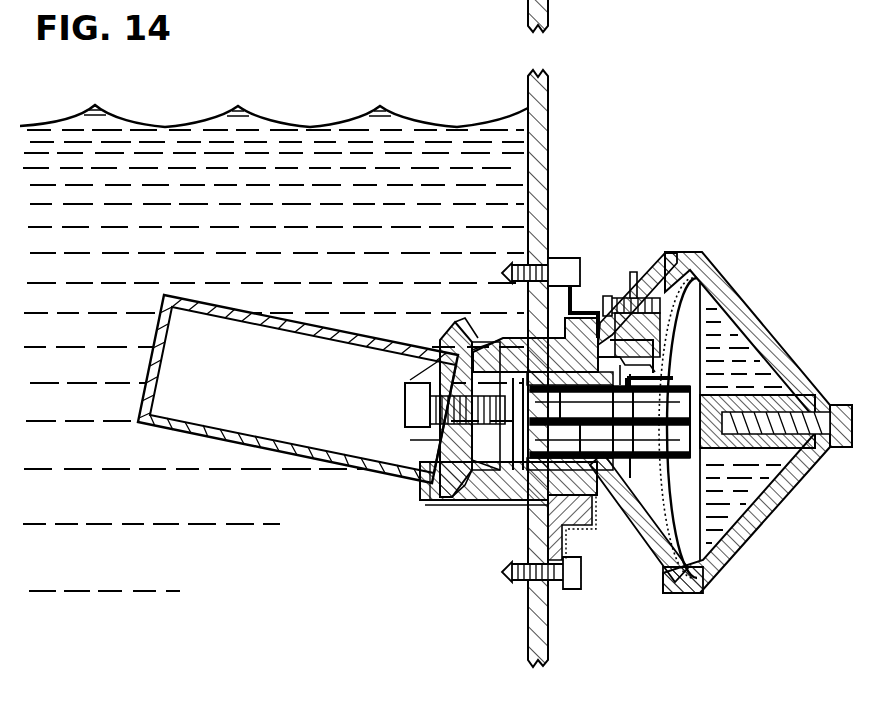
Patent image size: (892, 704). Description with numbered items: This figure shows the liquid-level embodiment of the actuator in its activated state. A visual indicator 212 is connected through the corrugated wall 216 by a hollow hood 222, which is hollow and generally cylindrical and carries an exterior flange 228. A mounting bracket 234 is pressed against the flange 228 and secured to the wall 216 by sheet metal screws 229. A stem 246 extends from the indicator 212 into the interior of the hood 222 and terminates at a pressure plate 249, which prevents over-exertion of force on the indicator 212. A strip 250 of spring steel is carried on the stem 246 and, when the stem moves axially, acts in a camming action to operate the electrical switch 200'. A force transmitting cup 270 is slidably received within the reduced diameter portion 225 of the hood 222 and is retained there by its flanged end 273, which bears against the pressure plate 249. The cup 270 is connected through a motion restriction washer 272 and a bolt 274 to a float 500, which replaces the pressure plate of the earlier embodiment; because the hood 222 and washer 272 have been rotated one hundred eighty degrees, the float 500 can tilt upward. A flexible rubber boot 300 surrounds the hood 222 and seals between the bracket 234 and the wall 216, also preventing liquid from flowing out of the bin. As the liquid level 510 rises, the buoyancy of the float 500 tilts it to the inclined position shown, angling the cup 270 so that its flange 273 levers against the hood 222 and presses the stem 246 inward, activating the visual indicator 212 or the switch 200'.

The liquid level 510 is at (178, 127).
The float 500 is at (264, 302).
The corrugated wall 216 is at (550, 185).
The hollow hood 222 is at (478, 502).
The reduced diameter portion 225 is at (447, 500).
The pressure plate 249 is at (512, 507).
The force transmitting cup 270 is at (430, 377).
The flanged end 273 is at (480, 340).
The flexible rubber boot 300 is at (468, 340).
The motion restriction washer 272 is at (444, 470).
The bolt 274 is at (413, 400).
The stem 246 is at (667, 457).
The sheet metal screws 229 is at (510, 262).
The exterior flange 228 is at (590, 310).
The mounting bracket 234 is at (592, 530).
The electrical switch 200' is at (661, 286).
The visual indicator 212 is at (745, 296).
The strip of spring steel 250 is at (707, 372).